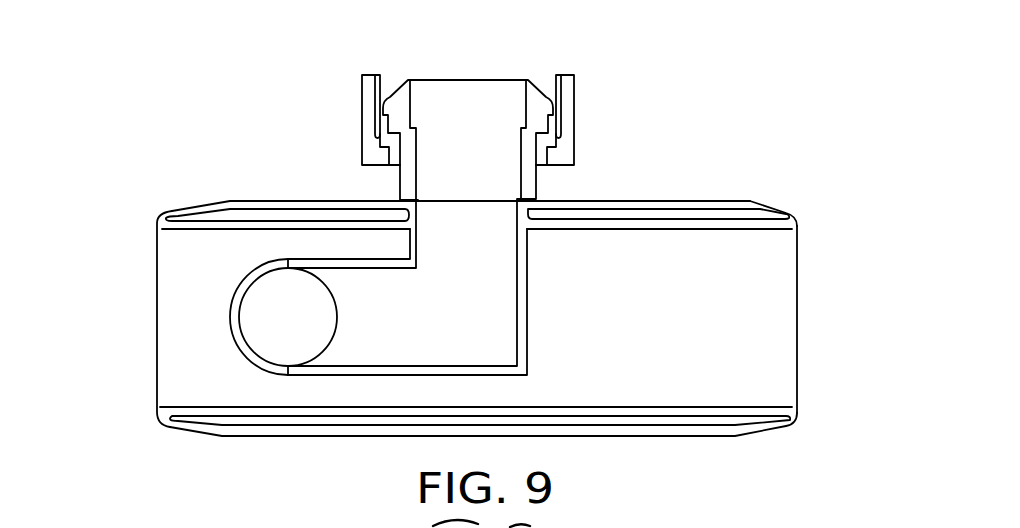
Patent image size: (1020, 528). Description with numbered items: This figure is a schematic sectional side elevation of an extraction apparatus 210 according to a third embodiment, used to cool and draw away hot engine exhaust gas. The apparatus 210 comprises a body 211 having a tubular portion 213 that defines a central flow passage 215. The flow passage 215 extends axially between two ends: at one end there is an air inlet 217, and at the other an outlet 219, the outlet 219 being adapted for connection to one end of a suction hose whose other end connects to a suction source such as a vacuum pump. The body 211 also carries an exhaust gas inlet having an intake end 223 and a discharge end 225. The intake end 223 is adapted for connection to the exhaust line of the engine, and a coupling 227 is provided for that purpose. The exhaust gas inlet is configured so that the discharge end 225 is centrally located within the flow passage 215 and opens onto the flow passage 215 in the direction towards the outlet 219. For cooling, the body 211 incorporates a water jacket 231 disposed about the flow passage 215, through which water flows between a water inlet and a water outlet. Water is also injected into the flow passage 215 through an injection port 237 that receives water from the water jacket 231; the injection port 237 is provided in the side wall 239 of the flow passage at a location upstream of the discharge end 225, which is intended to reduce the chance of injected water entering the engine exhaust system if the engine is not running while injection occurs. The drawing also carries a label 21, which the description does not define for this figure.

The apparatus 210 is at (197, 181).
The coupling 227 is at (362, 103).
The intake end 223 is at (468, 80).
The tubular portion 213 is at (600, 200).
The body 211 is at (653, 200).
The water jacket 231 is at (716, 215).
The injection port 237 is at (338, 222).
The central flow passage 215 is at (715, 281).
The discharge end 225 is at (270, 310).
The outlet 219 is at (155, 347).
The air inlet 217 is at (800, 338).
The side wall 239 is at (720, 405).
The liner 21 is at (524, 332).